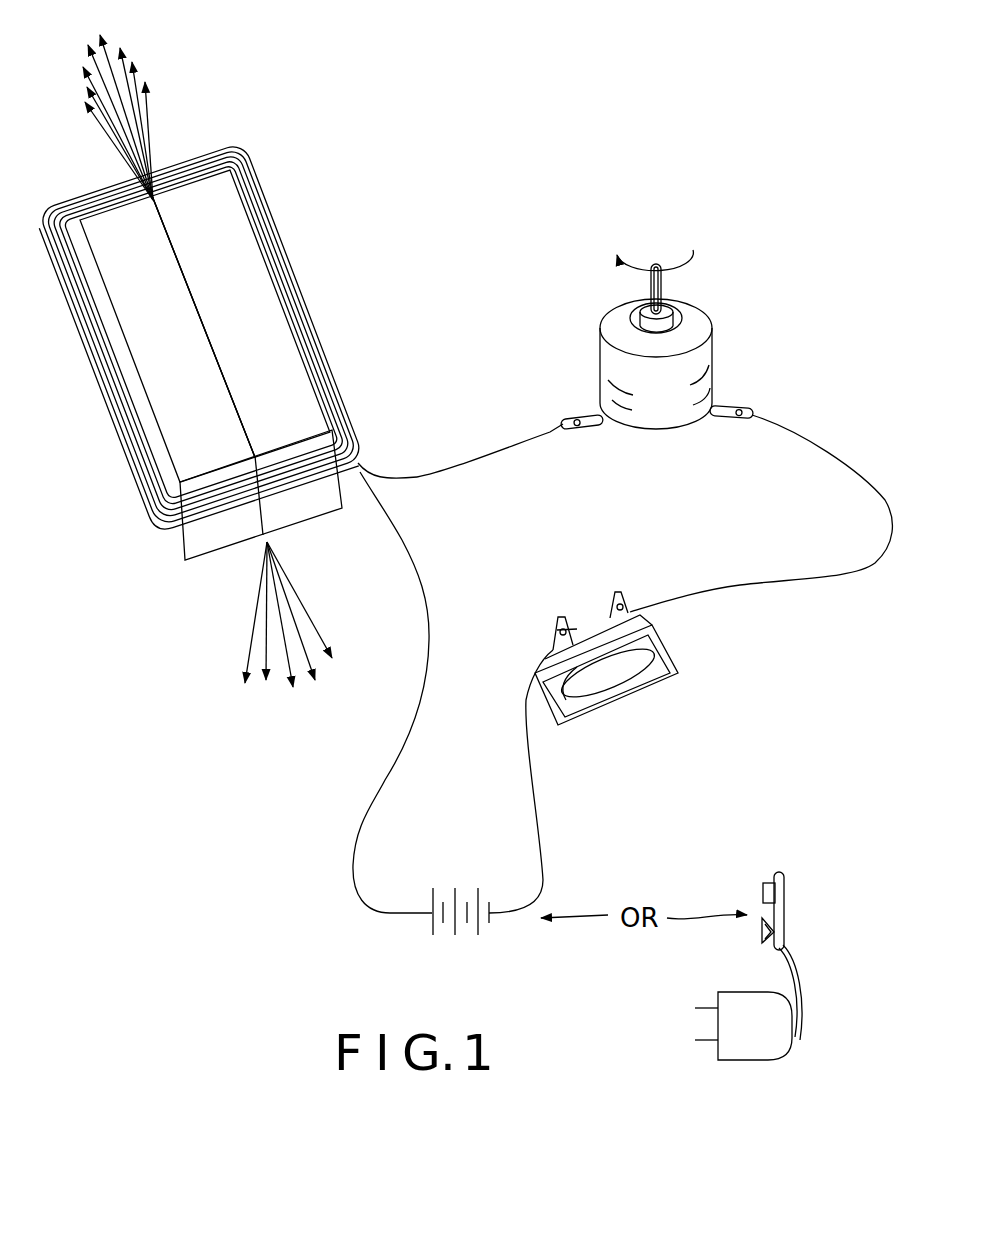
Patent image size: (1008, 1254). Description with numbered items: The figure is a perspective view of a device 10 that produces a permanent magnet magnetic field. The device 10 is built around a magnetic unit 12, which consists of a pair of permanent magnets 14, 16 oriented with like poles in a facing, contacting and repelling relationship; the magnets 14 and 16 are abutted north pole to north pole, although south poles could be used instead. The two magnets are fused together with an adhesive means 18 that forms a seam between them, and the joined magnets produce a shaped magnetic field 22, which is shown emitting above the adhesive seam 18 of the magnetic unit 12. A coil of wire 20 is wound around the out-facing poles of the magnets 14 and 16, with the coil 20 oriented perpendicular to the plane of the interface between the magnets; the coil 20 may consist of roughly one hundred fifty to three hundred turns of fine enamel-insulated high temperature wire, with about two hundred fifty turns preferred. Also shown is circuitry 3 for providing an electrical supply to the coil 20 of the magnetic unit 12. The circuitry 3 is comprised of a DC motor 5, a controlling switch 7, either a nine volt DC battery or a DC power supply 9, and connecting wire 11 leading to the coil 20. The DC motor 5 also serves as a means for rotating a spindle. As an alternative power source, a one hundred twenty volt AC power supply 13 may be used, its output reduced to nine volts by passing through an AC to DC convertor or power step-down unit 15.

The circuitry 3 is at (595, 544).
The DC motor 5 is at (722, 333).
The controlling switch 7 is at (684, 655).
The DC battery or DC power supply 9 is at (455, 873).
The device 10 is at (840, 732).
The connecting wire 11 is at (483, 463).
The magnetic unit 12 is at (211, 393).
The AC power supply 13 is at (692, 1040).
The permanent magnet 14 is at (188, 361).
The AC to DC convertor or power step-down unit 15 is at (792, 884).
The permanent magnet 16 is at (262, 347).
The adhesive means 18 is at (172, 228).
The coil of wire 20 is at (305, 300).
The magnetic field 22 is at (162, 92).